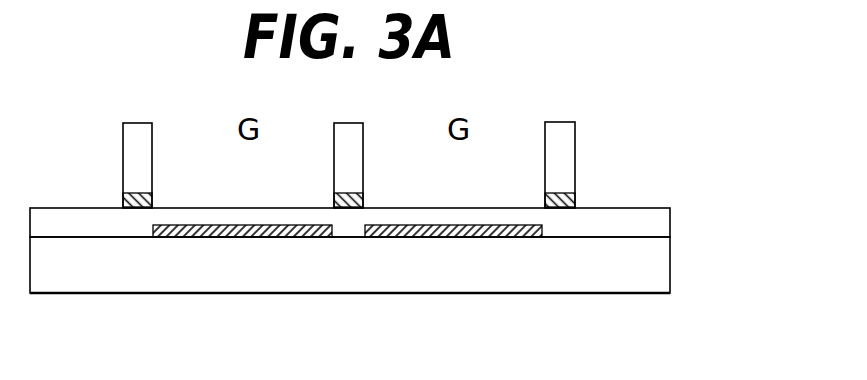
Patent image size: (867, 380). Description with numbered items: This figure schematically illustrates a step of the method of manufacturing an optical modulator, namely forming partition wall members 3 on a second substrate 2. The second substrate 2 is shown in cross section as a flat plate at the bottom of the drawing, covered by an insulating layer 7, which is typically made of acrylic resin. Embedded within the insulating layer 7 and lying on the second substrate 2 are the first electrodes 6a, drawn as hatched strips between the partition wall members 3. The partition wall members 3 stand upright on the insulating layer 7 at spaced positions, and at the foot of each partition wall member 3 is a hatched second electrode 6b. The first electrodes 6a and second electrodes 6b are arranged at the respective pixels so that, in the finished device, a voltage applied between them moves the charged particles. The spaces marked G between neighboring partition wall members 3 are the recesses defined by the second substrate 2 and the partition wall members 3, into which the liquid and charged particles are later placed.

The second substrate 2 is at (659, 266).
The insulating layer 7 is at (658, 223).
The first electrodes 6a is at (495, 232).
The second electrodes 6b is at (573, 195).
The partition wall members 3 is at (566, 139).